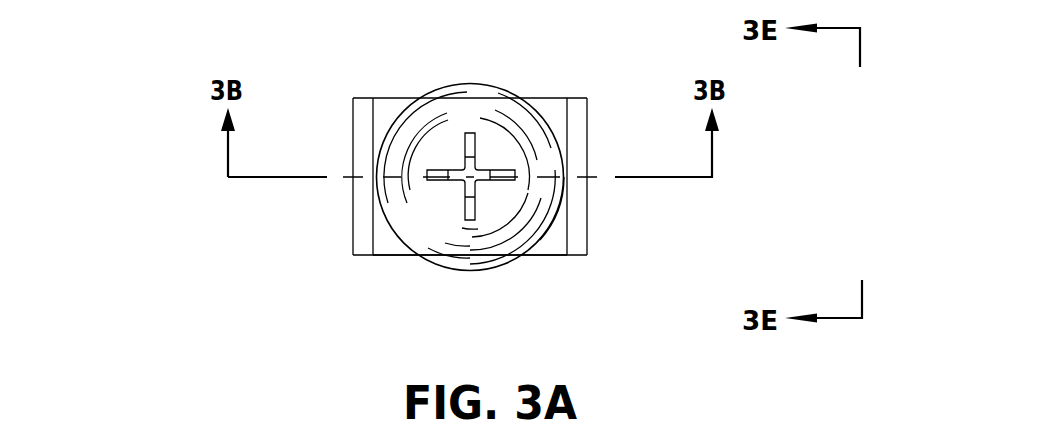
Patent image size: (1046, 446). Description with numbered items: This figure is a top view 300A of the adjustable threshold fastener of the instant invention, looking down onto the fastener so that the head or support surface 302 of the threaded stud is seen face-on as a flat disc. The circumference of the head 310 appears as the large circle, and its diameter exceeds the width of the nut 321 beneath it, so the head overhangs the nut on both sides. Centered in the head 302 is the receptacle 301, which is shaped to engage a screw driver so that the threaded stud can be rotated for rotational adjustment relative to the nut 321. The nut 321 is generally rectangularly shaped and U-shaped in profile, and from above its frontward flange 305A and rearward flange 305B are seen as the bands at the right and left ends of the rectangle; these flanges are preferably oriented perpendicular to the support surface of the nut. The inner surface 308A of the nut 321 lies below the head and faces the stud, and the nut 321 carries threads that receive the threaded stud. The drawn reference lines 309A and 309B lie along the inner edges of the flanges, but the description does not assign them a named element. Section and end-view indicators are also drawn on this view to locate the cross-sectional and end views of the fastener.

The top view 300A is at (236, 38).
The receptacle 301 is at (468, 147).
The head or support surface 302 is at (493, 100).
The frontward flange 305A is at (588, 138).
The rearward flange 305B is at (353, 222).
The inner surface 308A is at (393, 243).
The first side wall 309A is at (580, 213).
The second side wall 309B is at (363, 148).
The circumference of the head 310 is at (472, 270).
The nut 321 is at (567, 235).